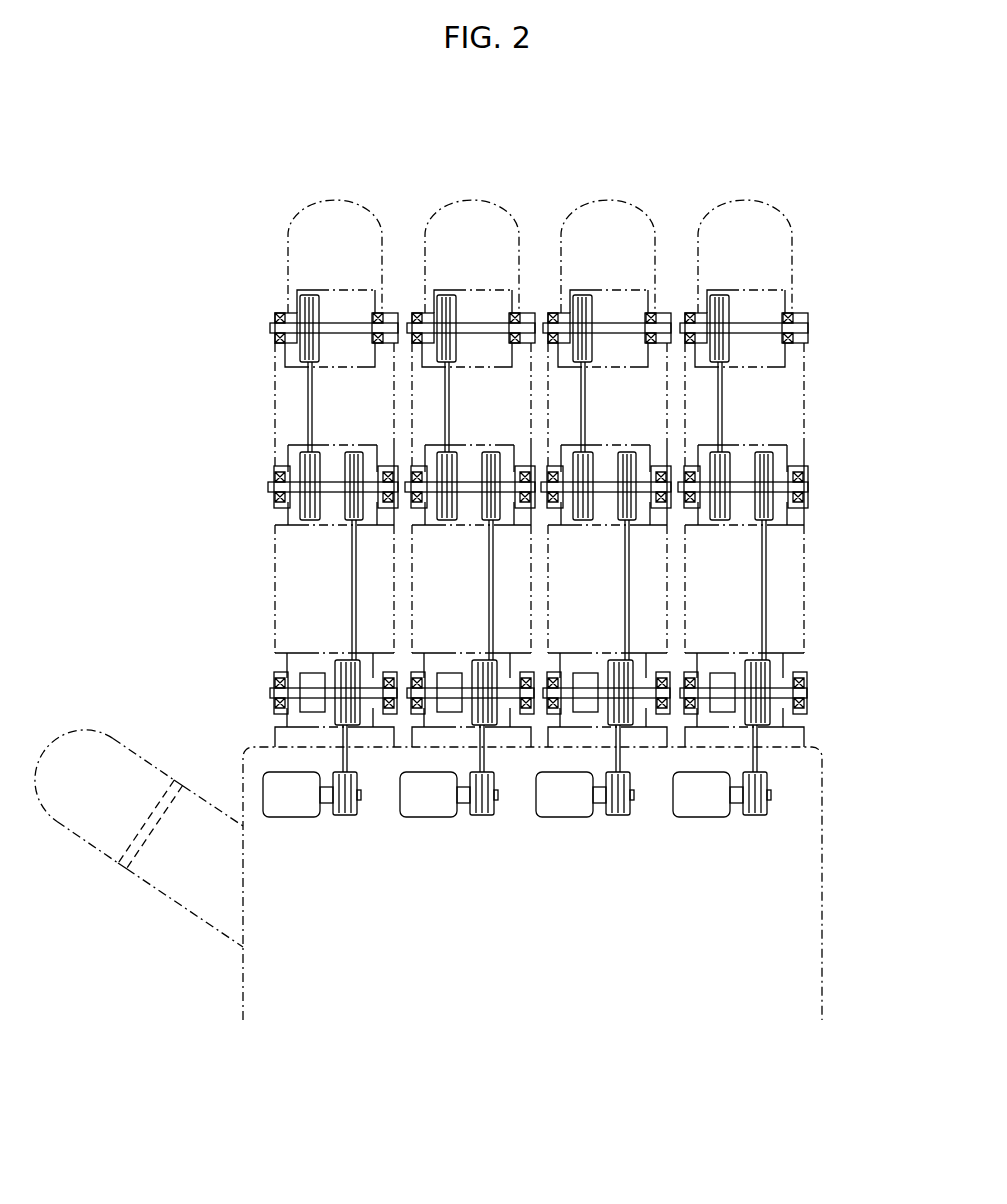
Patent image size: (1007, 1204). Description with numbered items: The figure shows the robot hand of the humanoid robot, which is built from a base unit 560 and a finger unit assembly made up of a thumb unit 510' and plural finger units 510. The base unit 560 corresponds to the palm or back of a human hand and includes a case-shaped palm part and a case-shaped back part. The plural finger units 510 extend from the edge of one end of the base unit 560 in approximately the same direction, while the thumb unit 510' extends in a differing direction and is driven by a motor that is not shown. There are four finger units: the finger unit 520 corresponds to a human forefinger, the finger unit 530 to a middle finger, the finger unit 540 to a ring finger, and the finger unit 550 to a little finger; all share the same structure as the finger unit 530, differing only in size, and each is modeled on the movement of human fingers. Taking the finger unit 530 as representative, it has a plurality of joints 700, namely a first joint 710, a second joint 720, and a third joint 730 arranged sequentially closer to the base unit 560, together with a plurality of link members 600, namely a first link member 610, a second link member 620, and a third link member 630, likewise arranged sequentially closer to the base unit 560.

The finger units 510 is at (539, 370).
The finger unit 520 is at (340, 190).
The finger unit 530 is at (477, 190).
The finger unit 540 is at (613, 190).
The finger unit 550 is at (749, 190).
The thumb unit 510' is at (139, 839).
The base unit 560 is at (810, 931).
The link members 600 is at (172, 268).
The first link member 610 is at (437, 583).
The second link member 620 is at (427, 410).
The third link member 630 is at (437, 270).
The joints 700 is at (872, 264).
The first joint 710 is at (520, 680).
The second joint 720 is at (527, 473).
The third joint 730 is at (514, 318).